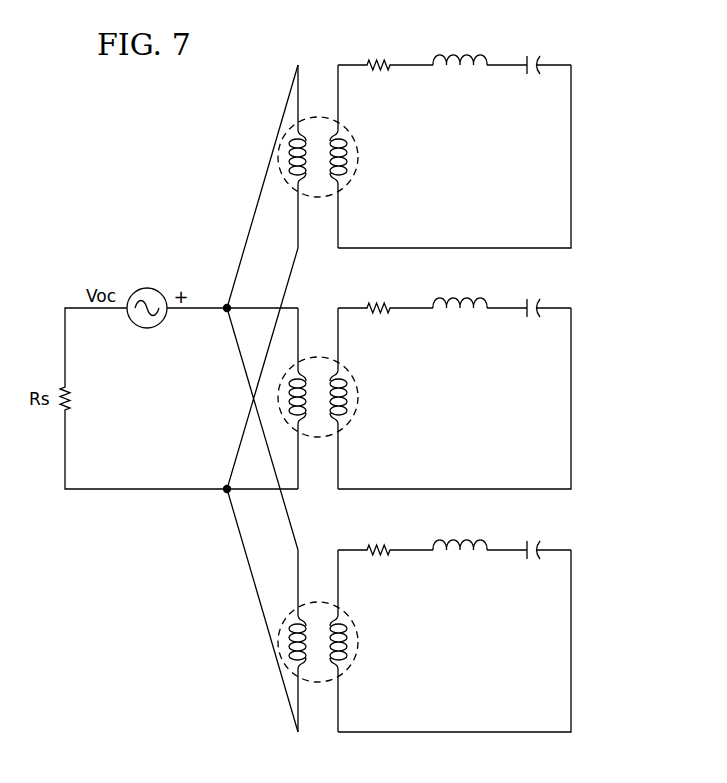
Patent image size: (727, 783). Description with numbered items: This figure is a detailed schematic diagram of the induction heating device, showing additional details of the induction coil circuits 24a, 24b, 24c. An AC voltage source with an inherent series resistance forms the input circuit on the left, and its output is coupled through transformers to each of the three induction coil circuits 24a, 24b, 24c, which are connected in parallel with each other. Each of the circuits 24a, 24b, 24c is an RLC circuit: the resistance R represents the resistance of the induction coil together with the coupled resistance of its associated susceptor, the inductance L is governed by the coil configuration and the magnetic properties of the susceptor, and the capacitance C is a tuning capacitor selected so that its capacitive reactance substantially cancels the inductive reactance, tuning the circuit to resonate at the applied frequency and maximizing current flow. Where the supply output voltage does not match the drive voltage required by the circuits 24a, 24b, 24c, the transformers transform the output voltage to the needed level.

The induction coil circuit 24a is at (620, 100).
The induction coil circuit 24b is at (620, 342).
The induction coil circuit 24c is at (620, 697).